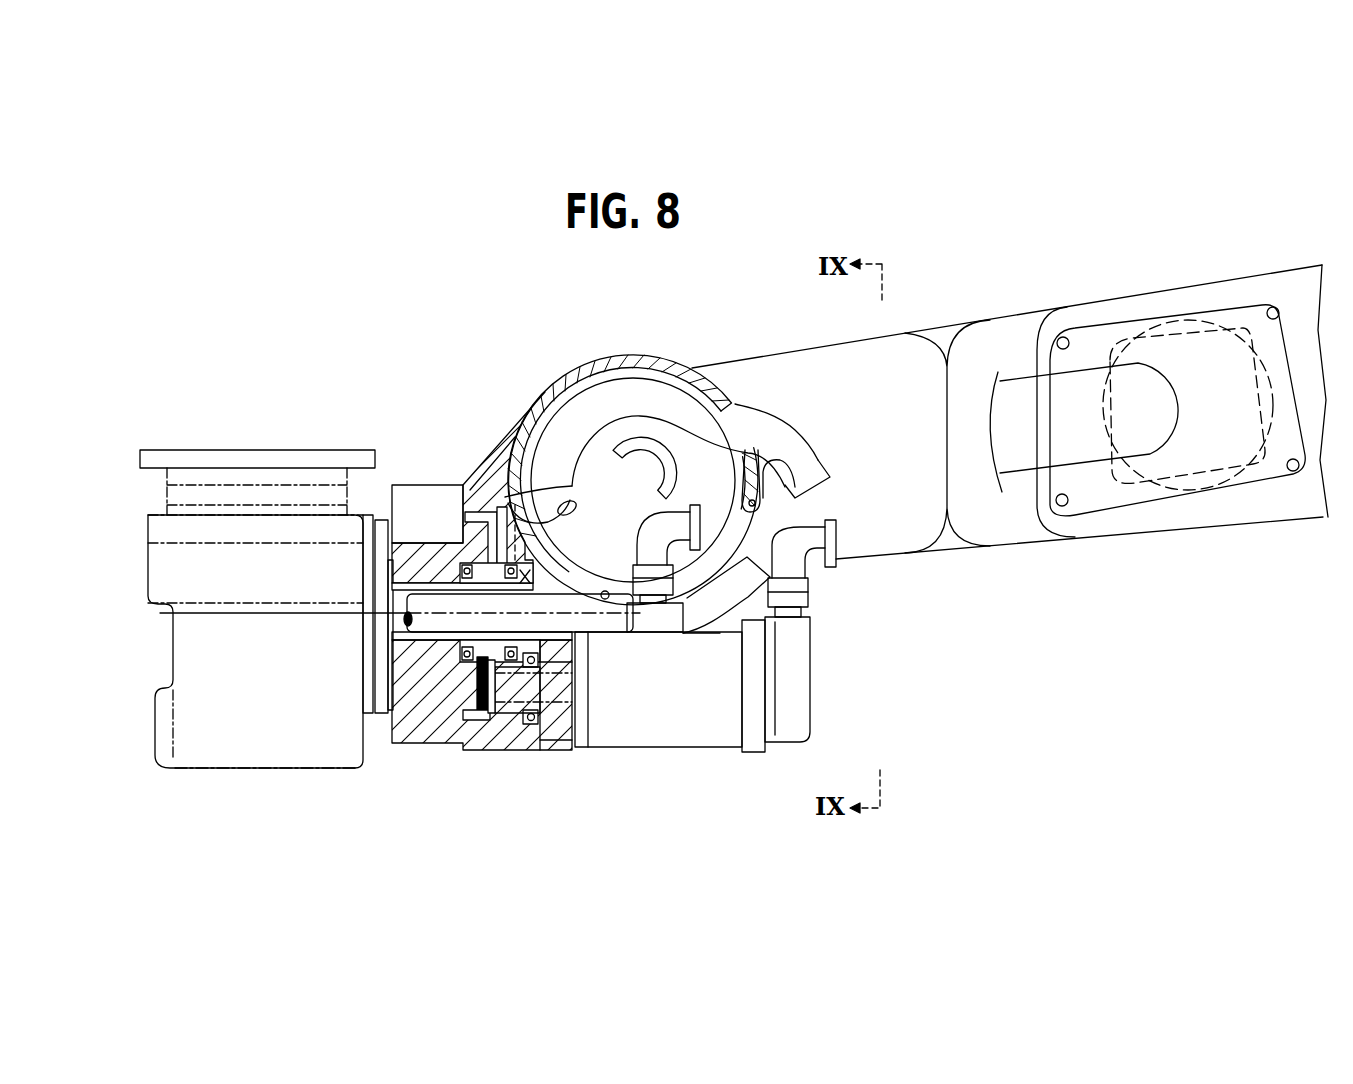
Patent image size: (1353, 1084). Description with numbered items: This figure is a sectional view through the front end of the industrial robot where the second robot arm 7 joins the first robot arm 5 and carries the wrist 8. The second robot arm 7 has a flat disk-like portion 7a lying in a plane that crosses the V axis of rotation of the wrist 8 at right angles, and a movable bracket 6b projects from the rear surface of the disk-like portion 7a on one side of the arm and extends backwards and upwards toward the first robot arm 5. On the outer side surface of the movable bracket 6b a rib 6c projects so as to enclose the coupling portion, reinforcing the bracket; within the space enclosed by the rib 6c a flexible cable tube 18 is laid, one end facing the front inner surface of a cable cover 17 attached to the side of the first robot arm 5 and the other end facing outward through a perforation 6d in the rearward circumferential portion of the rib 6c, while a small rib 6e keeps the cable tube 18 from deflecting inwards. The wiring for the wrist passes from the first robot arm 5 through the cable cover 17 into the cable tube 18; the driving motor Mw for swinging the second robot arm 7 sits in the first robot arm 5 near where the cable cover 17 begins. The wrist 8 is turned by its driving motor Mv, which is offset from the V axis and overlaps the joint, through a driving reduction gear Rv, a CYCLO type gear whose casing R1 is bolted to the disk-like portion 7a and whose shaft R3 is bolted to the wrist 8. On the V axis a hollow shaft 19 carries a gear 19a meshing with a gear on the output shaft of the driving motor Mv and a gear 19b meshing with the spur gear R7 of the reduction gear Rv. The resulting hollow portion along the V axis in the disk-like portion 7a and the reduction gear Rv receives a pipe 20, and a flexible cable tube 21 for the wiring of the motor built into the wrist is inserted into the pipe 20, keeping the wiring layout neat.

The first robot arm 5 is at (941, 328).
The movable bracket 6b is at (672, 440).
The rib 6c is at (592, 330).
The perforation 6d is at (742, 468).
The small rib 6e is at (668, 470).
The second robot arm 7 is at (483, 408).
The disk-like portion 7a is at (505, 470).
The wrist 8 is at (303, 767).
The cable cover 17 is at (1000, 515).
The flexible cable tube 18 is at (568, 410).
The hollow shaft 19 is at (482, 547).
The gear 19a is at (573, 487).
The gear 19b is at (512, 725).
The pipe 20 is at (443, 662).
The flexible cable tube 21 is at (436, 633).
The driving motor Mv is at (695, 742).
The driving motor Mw is at (1133, 347).
The casing R1 is at (425, 490).
The shaft R3 is at (375, 520).
The spur gear R7 is at (490, 713).
The driving reduction gear Rv is at (405, 728).
The V axis V is at (228, 615).